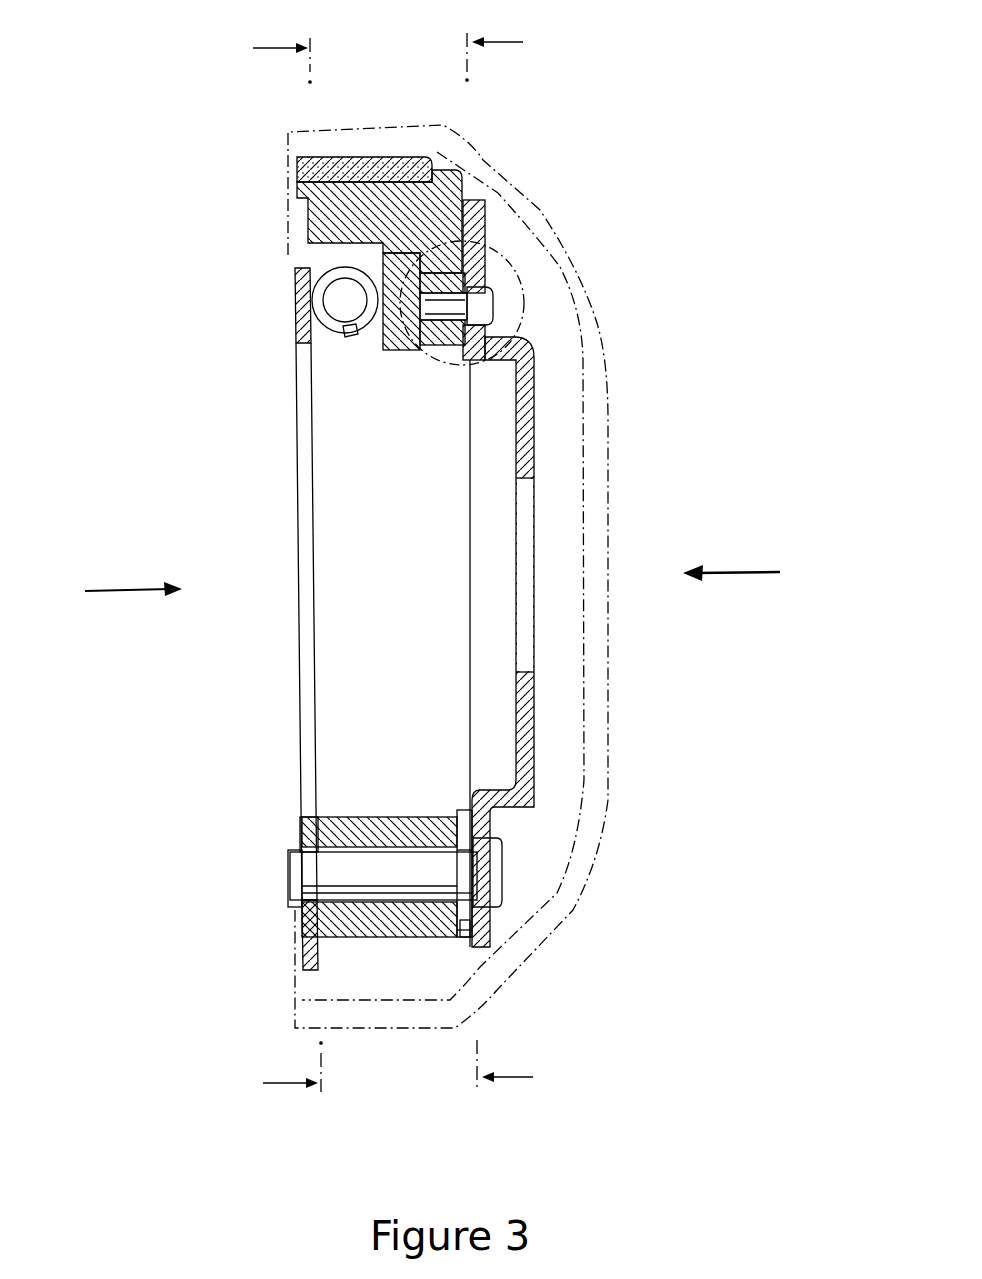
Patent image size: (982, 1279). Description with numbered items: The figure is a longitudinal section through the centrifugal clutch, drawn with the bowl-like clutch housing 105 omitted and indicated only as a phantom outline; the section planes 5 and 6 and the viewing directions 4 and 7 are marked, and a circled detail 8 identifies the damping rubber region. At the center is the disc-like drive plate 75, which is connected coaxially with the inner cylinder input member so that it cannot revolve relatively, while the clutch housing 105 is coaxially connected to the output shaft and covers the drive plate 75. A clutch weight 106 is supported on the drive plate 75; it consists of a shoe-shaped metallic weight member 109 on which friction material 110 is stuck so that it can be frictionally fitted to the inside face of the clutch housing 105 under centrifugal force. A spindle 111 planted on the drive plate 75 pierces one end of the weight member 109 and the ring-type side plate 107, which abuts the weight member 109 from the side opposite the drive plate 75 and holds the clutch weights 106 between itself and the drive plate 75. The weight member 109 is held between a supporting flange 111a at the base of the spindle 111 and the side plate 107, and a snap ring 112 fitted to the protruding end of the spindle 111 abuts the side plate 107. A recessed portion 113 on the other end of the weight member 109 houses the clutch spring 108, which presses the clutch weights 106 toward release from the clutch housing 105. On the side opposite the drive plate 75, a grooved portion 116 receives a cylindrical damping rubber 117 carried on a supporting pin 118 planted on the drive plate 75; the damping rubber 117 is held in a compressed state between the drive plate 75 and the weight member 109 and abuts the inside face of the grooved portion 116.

The section view direction arrow 4 is at (120, 594).
The section line 5- 5 is at (287, 570).
The section line 6- 6 is at (499, 567).
The view direction arrow 7 is at (751, 574).
The detail circle 8 is at (525, 330).
The drive plate 75 is at (520, 427).
The clutch housing 105 is at (600, 330).
The clutch weight 106 is at (625, 80).
The side plate 107 is at (295, 307).
The clutch spring 108 is at (332, 272).
The weight member 109 is at (483, 216).
The friction material 110 is at (413, 153).
The spindle 111 is at (413, 878).
The supporting flange 111a is at (465, 927).
The snap ring 112 is at (297, 908).
The recessed portion 113 is at (350, 338).
The grooved portion 116 is at (478, 275).
The damping rubber 117 is at (452, 350).
The supporting pin 118 is at (403, 352).